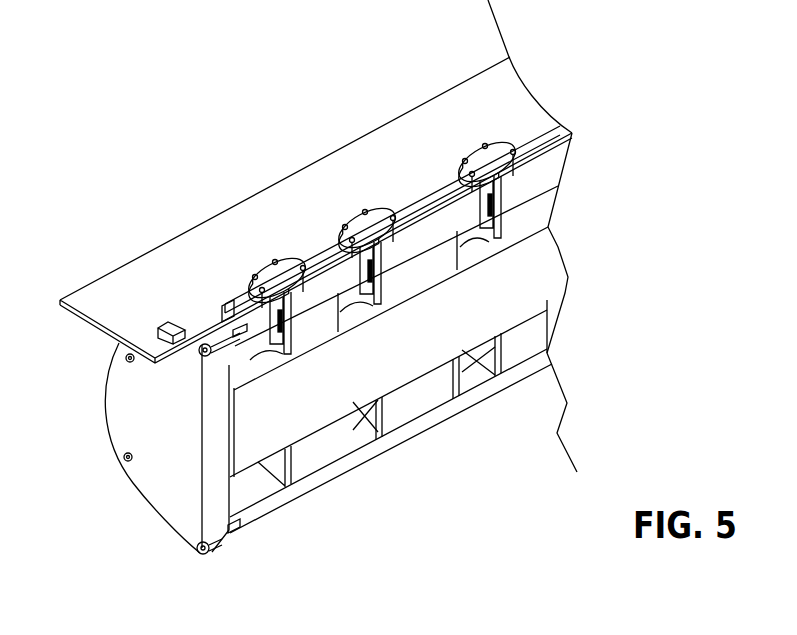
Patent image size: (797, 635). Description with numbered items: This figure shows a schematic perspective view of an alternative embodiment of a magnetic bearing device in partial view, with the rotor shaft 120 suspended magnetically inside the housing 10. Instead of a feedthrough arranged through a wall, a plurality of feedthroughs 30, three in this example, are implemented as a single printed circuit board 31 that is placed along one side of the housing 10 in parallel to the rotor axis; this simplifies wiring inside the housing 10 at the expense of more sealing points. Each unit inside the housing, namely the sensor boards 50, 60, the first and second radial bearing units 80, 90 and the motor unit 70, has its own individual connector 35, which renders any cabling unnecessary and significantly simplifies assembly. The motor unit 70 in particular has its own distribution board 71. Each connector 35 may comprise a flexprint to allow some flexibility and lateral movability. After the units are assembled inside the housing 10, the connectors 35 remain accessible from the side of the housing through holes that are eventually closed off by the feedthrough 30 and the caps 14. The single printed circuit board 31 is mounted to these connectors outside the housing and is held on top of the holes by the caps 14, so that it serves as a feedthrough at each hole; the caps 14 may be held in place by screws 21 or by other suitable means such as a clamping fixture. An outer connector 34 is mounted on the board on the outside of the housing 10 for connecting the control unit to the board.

The housing 10 is at (134, 517).
The cap 14 is at (365, 229).
The screw 21 is at (232, 320).
The feedthrough 30 is at (359, 187).
The printed circuit board 31 is at (103, 297).
The outer connector 34 is at (175, 321).
The connector 35 is at (475, 160).
The sensor board 50 is at (280, 462).
The sensor board 60 is at (488, 352).
The motor unit 70 is at (417, 403).
The distribution board 71 is at (370, 420).
The first radial bearing unit 80 is at (307, 462).
The second radial bearing unit 90 is at (517, 333).
The rotor shaft 120 is at (527, 270).